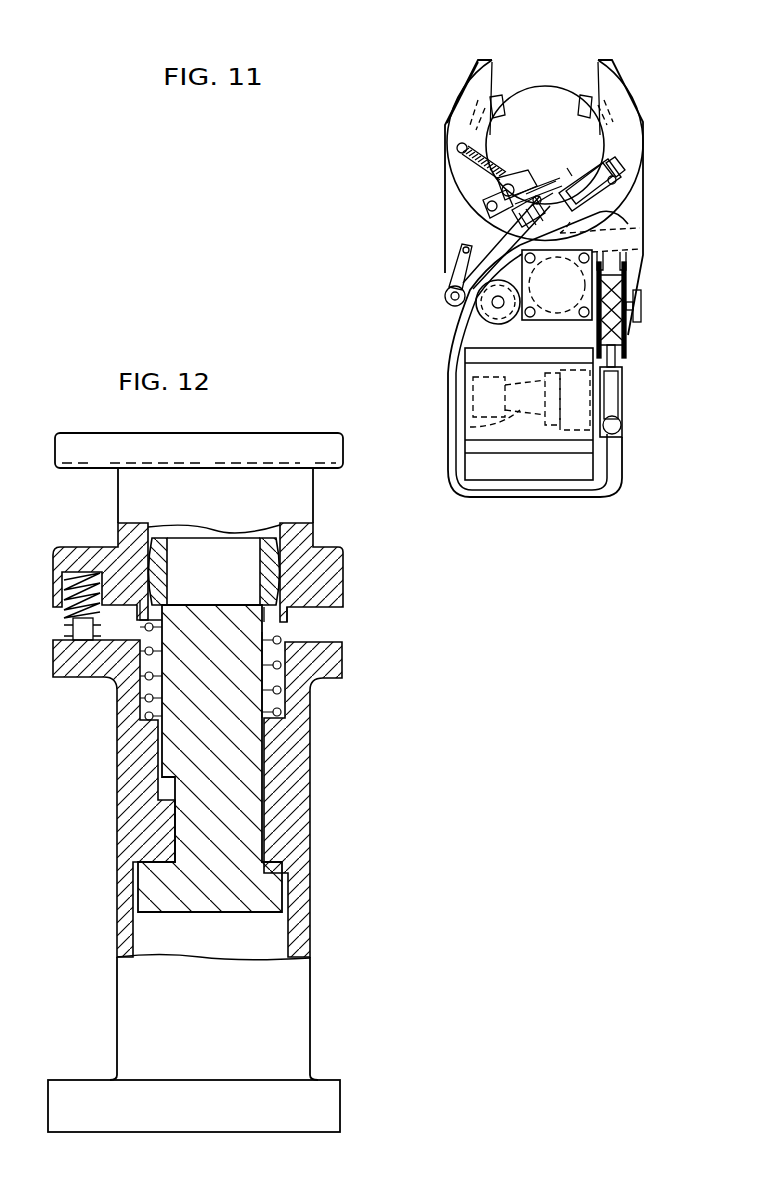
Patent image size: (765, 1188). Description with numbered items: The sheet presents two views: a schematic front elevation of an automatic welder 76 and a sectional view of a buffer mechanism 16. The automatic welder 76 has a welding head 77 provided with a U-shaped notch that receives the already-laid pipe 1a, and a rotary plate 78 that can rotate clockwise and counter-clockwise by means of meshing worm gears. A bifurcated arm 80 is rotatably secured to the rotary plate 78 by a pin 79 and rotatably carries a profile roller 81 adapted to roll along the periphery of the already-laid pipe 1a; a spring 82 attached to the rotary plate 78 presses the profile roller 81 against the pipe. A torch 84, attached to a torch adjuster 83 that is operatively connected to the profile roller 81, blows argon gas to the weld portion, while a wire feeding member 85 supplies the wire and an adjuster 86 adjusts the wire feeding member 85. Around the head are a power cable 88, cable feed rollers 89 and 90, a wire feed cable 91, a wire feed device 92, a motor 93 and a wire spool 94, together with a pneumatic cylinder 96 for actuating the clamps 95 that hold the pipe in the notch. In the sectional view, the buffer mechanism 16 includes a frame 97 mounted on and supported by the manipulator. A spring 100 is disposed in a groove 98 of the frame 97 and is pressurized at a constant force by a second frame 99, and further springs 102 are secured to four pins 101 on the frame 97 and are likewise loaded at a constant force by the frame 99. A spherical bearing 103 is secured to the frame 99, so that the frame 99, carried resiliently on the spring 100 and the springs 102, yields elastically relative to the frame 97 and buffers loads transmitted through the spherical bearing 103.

In FIG. 11, the already-laid pipe 1a is at (550, 84).
In FIG. 11, the welding head 77 is at (624, 86).
In FIG. 11, the rotary plate 78 is at (470, 95).
In FIG. 11, the clamps 95 is at (497, 96).
In FIG. 11, the spring 82 is at (461, 146).
In FIG. 11, the profile roller 81 is at (513, 184).
In FIG. 11, the pin 79 is at (486, 206).
In FIG. 11, the torch adjuster 83 is at (535, 192).
In FIG. 11, the wire feeding member 85 is at (540, 196).
In FIG. 11, the torch 84 is at (570, 166).
In FIG. 11, the bifurcated arm 80 is at (518, 216).
In FIG. 11, the cable feed roller 89 is at (444, 294).
In FIG. 11, the cable feed roller 90 is at (488, 318).
In FIG. 11, the adjuster 86 is at (575, 267).
In FIG. 11, the power cable 88 is at (641, 229).
In FIG. 11, the pneumatic cylinder 96 is at (641, 251).
In FIG. 11, the automatic welder 76 is at (633, 270).
In FIG. 11, the wire spool 94 is at (627, 344).
In FIG. 11, the wire feed device 92 is at (623, 385).
In FIG. 11, the wire feed cable 91 is at (614, 462).
In FIG. 11, the motor 93 is at (470, 424).
In FIG. 12, the frame 97 is at (117, 808).
In FIG. 12, the frame 99 is at (90, 547).
In FIG. 12, the spherical bearing 103 is at (213, 538).
In FIG. 12, the buffer mechanism 16 is at (247, 748).
In FIG. 12, the groove 98 is at (300, 662).
In FIG. 12, the spring 100 is at (150, 686).
In FIG. 12, the springs 102 is at (68, 598).
In FIG. 12, the pins 101 is at (72, 632).